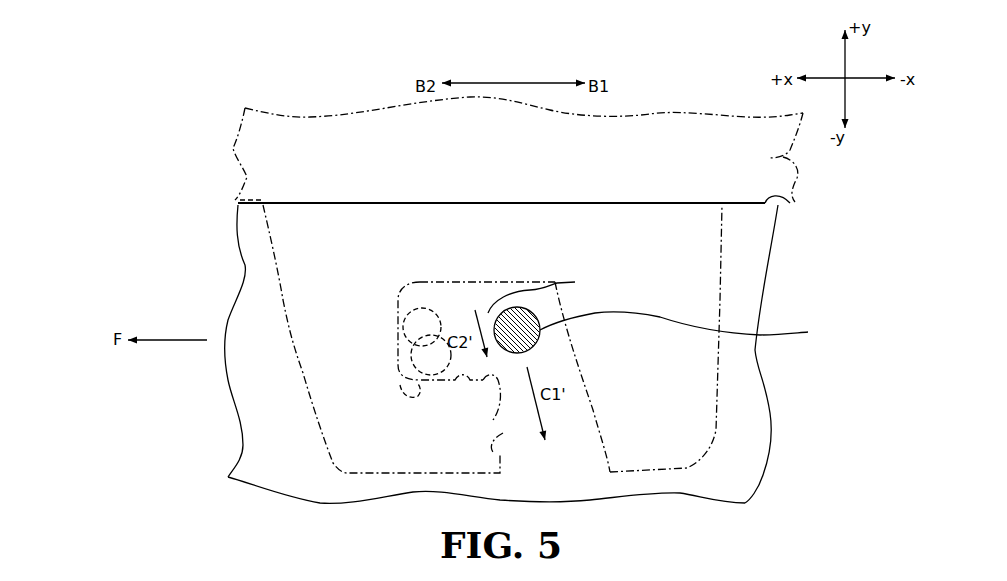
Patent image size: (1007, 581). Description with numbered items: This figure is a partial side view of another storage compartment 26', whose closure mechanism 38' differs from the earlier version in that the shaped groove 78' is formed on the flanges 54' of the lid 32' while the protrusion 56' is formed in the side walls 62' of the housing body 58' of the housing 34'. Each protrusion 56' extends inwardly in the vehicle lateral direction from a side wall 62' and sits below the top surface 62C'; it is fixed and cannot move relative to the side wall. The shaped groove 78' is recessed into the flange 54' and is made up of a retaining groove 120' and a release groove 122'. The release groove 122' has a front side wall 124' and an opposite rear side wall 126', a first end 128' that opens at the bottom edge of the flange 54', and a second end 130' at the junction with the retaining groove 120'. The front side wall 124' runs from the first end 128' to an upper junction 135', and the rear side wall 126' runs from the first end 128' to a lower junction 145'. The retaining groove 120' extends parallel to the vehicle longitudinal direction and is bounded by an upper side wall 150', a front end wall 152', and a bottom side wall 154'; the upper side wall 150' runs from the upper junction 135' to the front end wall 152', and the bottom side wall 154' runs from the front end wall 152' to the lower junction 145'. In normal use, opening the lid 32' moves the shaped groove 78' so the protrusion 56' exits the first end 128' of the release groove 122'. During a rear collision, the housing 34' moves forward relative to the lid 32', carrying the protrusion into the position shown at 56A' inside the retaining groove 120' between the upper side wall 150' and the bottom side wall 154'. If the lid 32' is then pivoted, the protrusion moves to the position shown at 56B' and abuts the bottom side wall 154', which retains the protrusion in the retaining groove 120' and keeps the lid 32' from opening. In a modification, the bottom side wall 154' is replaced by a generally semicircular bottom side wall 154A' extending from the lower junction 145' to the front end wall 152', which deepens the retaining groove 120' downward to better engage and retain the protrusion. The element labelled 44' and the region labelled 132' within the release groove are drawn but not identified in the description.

The storage compartment 26' is at (172, 40).
The lid 32' is at (678, 37).
The housing 34' is at (930, 484).
The closure mechanism 38' is at (460, 148).
The edge portion 44' is at (824, 179).
The flange 54' is at (791, 274).
The protrusion 56' is at (688, 327).
The protrusion 56A' is at (273, 295).
The protrusion 56B' is at (277, 383).
The housing body 58' is at (411, 353).
The side wall 62' is at (758, 371).
The top surface 62C' is at (816, 213).
The shaped groove 78' is at (719, 427).
The retaining groove 120' is at (503, 345).
The release groove 122' is at (717, 347).
The front side wall 124' is at (383, 377).
The rear side wall 126' is at (718, 381).
The first end 128' is at (621, 517).
The second end 130' is at (517, 298).
The cavity 132' is at (541, 467).
The upper junction 135' is at (619, 277).
The lower junction 145' is at (433, 421).
The upper side wall 150' is at (487, 251).
The front end wall 152' is at (392, 295).
The bottom side wall 154' is at (410, 388).
The bottom side wall 154A' is at (368, 395).